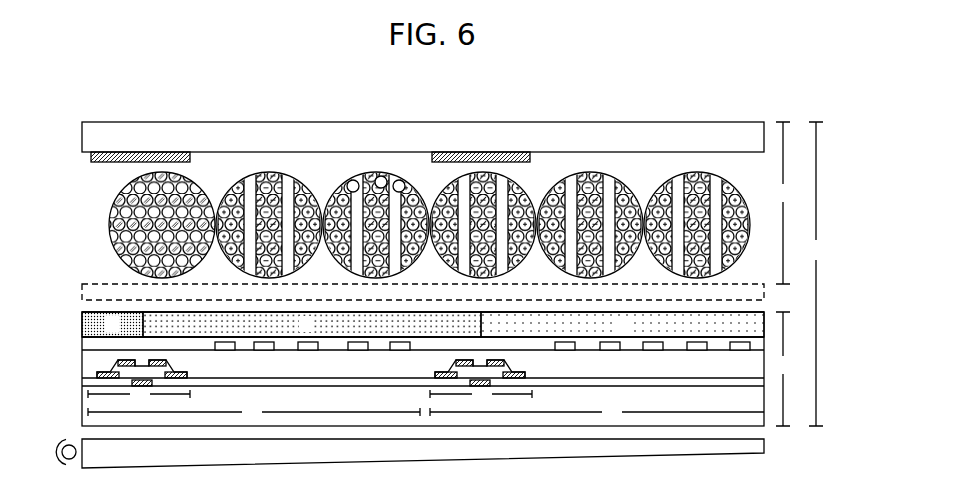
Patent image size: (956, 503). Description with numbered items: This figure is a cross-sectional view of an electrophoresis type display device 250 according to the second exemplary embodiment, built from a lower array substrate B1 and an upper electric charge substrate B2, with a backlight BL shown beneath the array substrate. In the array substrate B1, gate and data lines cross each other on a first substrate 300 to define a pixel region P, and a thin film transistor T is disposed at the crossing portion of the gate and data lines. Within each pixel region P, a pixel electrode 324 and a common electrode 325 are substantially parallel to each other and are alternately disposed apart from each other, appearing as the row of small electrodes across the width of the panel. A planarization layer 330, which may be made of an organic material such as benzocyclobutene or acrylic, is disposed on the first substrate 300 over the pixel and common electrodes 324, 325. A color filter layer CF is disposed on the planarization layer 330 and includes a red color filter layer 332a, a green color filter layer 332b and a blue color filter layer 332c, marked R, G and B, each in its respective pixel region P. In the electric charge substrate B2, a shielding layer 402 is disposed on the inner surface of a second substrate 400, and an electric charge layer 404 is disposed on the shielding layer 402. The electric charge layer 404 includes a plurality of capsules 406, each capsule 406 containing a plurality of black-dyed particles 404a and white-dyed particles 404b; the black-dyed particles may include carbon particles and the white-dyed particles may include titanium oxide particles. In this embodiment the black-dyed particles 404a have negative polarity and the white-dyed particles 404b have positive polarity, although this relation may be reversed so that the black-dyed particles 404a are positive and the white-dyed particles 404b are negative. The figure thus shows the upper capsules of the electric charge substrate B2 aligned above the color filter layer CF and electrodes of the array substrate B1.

The second substrate 400 is at (740, 145).
The shielding layer 402 is at (150, 152).
The electric charge layer 404 is at (78, 219).
The black-dyed particles 404a is at (352, 181).
The white-dyed particles 404b is at (400, 180).
The capsule 406 is at (380, 172).
The red color filter layer 332a is at (110, 312).
The green color filter layer 332b is at (173, 318).
The blue color filter layer 332c is at (722, 315).
The planarization layer 330 is at (82, 344).
The pixel electrode 324 is at (262, 341).
The negative electrode 325 is at (305, 341).
The first substrate 300 is at (741, 412).
The display unit total thickness 250 is at (816, 274).
The array substrate B1 is at (782, 369).
The electric charge substrate B2 is at (782, 203).
The color filter layer CF is at (80, 322).
The backlight unit BL is at (764, 446).
The red R is at (112, 324).
The green G is at (306, 324).
The blue B is at (621, 324).
The thin film transistor T is at (310, 394).
The pixel region P is at (426, 412).